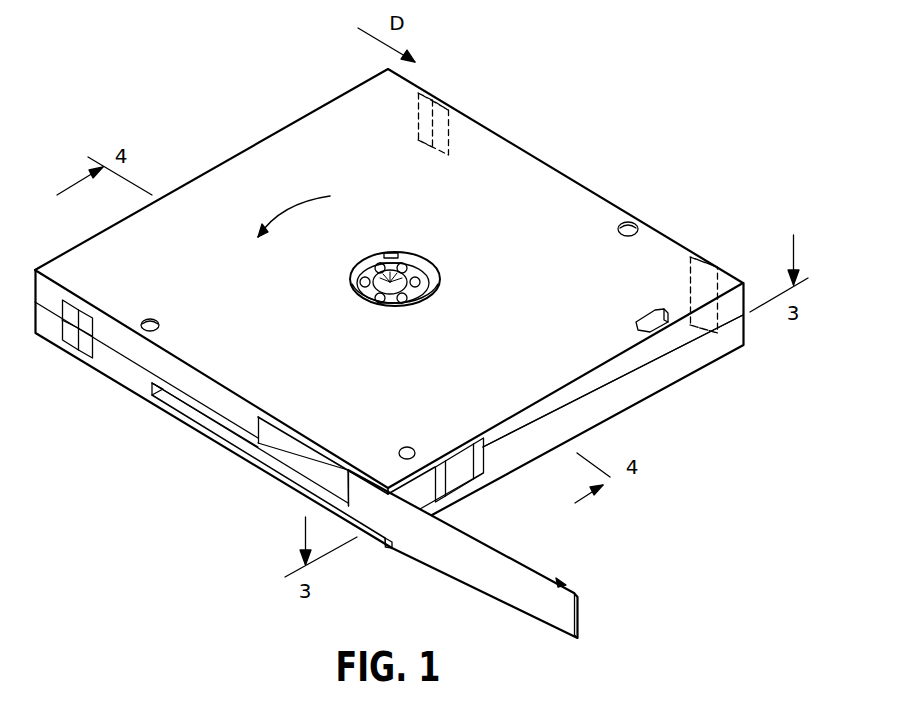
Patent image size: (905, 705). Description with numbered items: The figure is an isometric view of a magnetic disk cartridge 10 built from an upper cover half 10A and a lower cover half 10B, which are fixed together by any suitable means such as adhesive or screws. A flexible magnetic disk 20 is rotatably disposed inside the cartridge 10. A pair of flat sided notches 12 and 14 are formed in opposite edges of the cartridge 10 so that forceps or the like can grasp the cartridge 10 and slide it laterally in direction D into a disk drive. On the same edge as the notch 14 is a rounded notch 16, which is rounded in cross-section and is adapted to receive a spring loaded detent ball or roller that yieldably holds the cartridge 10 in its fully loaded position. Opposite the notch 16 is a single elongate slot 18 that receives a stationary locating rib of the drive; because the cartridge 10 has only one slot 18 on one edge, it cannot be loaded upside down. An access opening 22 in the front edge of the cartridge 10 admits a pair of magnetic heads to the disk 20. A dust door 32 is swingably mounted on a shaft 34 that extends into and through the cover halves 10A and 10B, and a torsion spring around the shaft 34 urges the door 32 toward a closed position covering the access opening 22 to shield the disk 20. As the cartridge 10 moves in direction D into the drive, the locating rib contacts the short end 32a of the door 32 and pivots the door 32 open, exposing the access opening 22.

The magnetic disk cartridge 10 is at (578, 172).
The upper cover half 10A is at (132, 350).
The lower cover half 10B is at (680, 385).
The flat sided notch 12 is at (64, 326).
The flat sided notch 14 is at (460, 120).
The rounded notch 16 is at (703, 254).
The elongate slot 18 is at (193, 413).
The flexible magnetic disk 20 is at (540, 415).
The access opening 22 is at (500, 465).
The dust door 32 is at (557, 560).
The short end of the door 32a is at (358, 492).
The shaft 34 is at (407, 445).